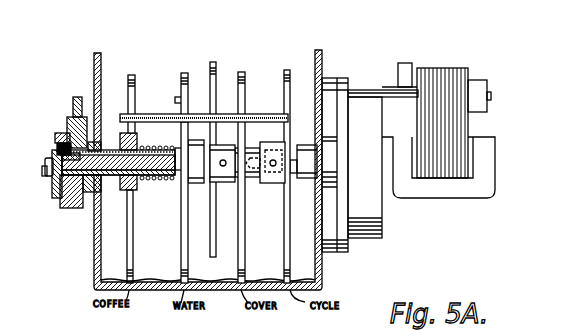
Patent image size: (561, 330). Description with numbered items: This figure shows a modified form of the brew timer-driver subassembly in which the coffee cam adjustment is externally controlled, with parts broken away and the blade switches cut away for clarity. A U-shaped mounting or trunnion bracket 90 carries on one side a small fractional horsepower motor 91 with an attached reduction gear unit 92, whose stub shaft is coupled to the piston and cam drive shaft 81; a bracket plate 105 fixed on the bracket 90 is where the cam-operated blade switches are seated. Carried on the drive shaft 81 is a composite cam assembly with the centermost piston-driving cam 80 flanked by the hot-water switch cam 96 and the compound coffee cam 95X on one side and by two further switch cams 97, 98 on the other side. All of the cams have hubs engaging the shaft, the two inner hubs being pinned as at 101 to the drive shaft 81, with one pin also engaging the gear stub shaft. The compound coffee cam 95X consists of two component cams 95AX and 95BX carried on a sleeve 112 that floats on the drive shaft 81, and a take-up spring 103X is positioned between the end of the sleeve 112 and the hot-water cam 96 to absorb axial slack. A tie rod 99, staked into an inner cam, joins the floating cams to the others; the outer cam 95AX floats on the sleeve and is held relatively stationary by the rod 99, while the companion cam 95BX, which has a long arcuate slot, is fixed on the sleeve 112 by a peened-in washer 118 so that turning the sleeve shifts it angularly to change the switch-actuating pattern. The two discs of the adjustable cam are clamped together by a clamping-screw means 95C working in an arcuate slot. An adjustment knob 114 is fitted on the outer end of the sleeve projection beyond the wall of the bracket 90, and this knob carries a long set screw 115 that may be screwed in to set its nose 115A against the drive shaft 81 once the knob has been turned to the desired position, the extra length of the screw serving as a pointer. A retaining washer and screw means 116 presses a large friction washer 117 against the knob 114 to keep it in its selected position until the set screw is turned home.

The U-shaped bracket 90 is at (97, 68).
The bracket plate 105 is at (300, 279).
The compound coffee cam 95X is at (133, 52).
The long set screw 115 is at (70, 102).
The nose of set screw 115A is at (62, 148).
The drive shaft 81 is at (45, 167).
The retaining washer and screw means 116 is at (42, 174).
The friction washer 117 is at (52, 188).
The adjustment knob 114 is at (72, 212).
The sleeve 112 is at (114, 185).
The peened-in washer 118 is at (137, 187).
The take-up spring 103X is at (157, 143).
The clamping screw 95C is at (177, 100).
The outer coffee cam 95AX is at (132, 78).
The companion coffee cam 95BX is at (183, 52).
The hot-water switch cam 96 is at (185, 57).
The piston-driving cam 80 is at (214, 70).
The switch cam 97 is at (241, 60).
The switch cam 98 is at (286, 60).
The tie rod 99 is at (250, 113).
The pin 101 is at (224, 168).
The reduction gear unit 92 is at (367, 88).
The motor 91 is at (443, 68).